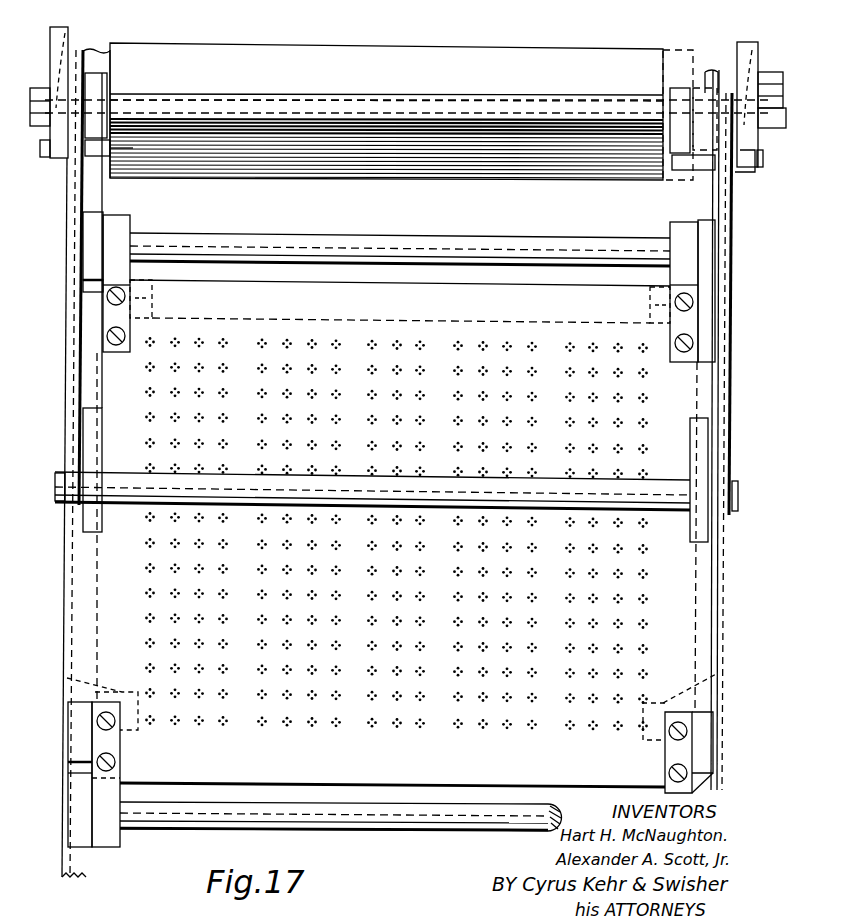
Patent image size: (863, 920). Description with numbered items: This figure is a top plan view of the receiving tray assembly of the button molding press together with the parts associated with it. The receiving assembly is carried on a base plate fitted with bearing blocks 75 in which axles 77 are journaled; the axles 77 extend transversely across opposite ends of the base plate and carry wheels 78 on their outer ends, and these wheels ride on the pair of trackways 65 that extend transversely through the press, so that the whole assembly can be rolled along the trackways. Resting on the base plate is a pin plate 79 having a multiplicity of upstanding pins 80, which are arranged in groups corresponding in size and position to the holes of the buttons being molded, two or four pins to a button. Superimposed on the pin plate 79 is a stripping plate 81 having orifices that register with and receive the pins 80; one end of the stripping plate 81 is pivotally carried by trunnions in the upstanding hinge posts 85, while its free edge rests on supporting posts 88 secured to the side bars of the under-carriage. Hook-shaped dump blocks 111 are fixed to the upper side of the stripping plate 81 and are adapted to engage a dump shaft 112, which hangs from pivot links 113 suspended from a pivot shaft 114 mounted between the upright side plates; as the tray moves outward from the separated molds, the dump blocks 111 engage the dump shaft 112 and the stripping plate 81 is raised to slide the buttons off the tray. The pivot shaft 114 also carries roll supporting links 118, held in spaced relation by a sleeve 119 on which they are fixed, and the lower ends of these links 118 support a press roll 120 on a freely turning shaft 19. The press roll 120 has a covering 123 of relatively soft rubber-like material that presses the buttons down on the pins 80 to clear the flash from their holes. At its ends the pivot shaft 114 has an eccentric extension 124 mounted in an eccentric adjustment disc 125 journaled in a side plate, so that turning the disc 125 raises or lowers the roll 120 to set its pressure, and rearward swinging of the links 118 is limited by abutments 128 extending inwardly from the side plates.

The shaft 19 is at (640, 113).
The trackways 65 is at (100, 52).
The bearing blocks 75 is at (110, 313).
The axles 77 is at (415, 245).
The wheels 78 is at (90, 250).
The pin plate 79 is at (92, 392).
The pins 80 is at (372, 343).
The stripping plate 81 is at (676, 631).
The hinge posts 85 is at (143, 292).
The supporting posts 88 is at (63, 677).
The dump blocks 111 is at (86, 522).
The dump shaft 112 is at (652, 513).
The pivot links 113 is at (76, 356).
The pivot shaft 114 is at (330, 128).
The roll supporting links 118 is at (98, 86).
The sleeve 119 is at (385, 96).
The press roll 120 is at (325, 36).
The covering 123 is at (433, 36).
The eccentric extension 124 is at (770, 62).
The eccentric adjustment disc 125 is at (740, 170).
The abutments 128 is at (100, 152).